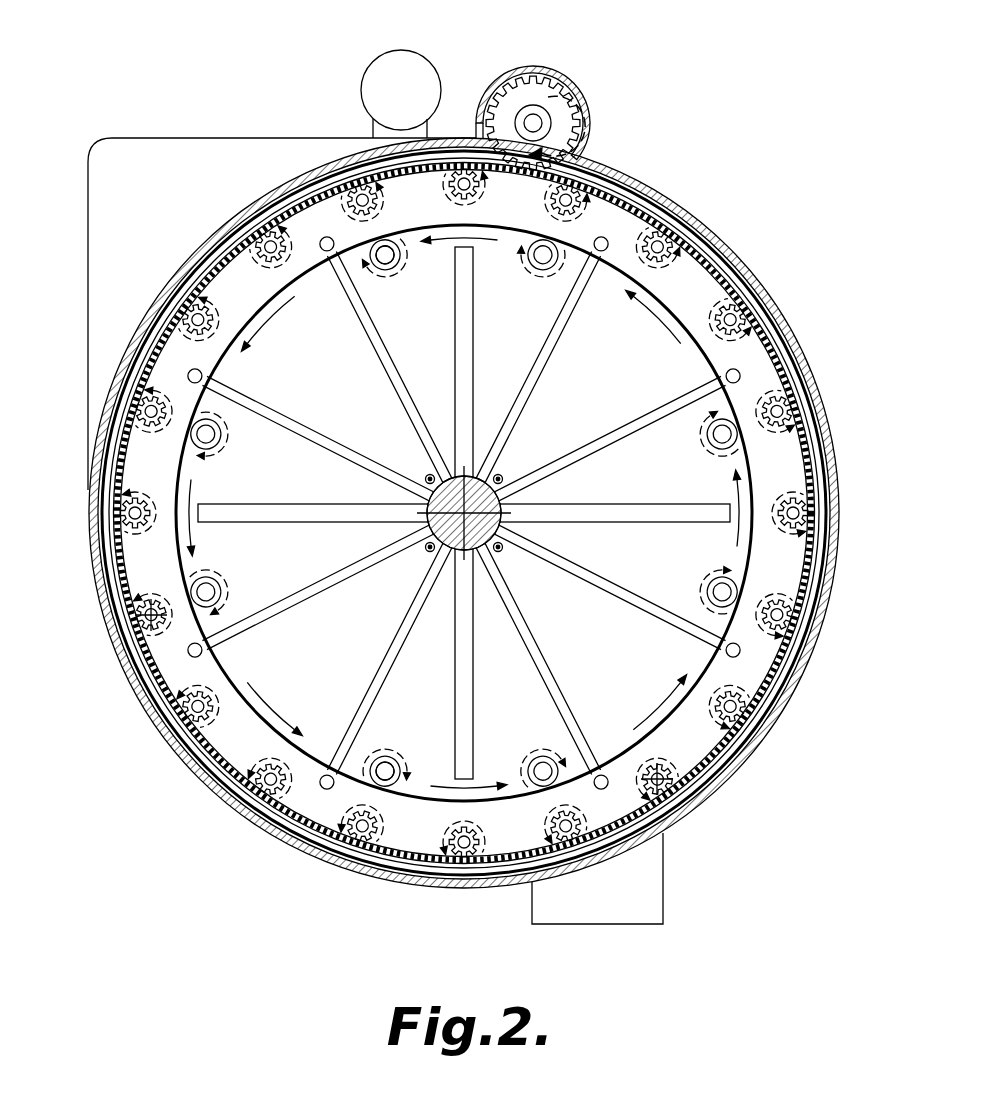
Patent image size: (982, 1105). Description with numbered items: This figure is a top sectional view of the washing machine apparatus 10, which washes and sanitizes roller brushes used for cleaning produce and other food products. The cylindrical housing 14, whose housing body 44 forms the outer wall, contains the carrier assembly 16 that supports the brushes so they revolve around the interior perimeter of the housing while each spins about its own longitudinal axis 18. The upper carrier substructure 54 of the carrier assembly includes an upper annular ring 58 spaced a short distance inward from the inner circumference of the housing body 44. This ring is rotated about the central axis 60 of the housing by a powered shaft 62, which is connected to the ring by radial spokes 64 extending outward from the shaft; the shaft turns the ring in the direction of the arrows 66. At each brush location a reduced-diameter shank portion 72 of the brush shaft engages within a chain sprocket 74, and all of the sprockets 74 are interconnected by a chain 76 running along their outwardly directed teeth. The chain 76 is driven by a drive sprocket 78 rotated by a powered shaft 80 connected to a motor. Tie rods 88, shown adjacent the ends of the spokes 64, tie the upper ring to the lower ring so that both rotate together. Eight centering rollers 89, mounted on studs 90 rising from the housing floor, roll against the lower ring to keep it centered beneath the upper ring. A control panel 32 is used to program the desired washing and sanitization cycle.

The washing machine apparatus 10 is at (143, 30).
The cylindrical housing 14 is at (90, 576).
The carrier assembly 16 is at (197, 760).
The longitudinal axis 18 is at (147, 628).
The control panel 32 is at (663, 878).
The housing body 44 is at (821, 636).
The upper carrier substructure 54 is at (358, 850).
The upper annular ring 58 is at (630, 221).
The central axis 60 is at (503, 480).
The powered shaft 62 is at (503, 547).
The radial spokes 64 is at (706, 396).
The arrows 66 is at (718, 316).
The shank portion 72 is at (799, 512).
The chain sprocket 74 is at (257, 236).
The chain 76 is at (720, 262).
The drive sprocket 78 is at (565, 92).
The powered shaft 80 is at (532, 122).
The tie rods 88 is at (187, 375).
The centering rollers 89 is at (369, 258).
The studs 90 is at (378, 260).